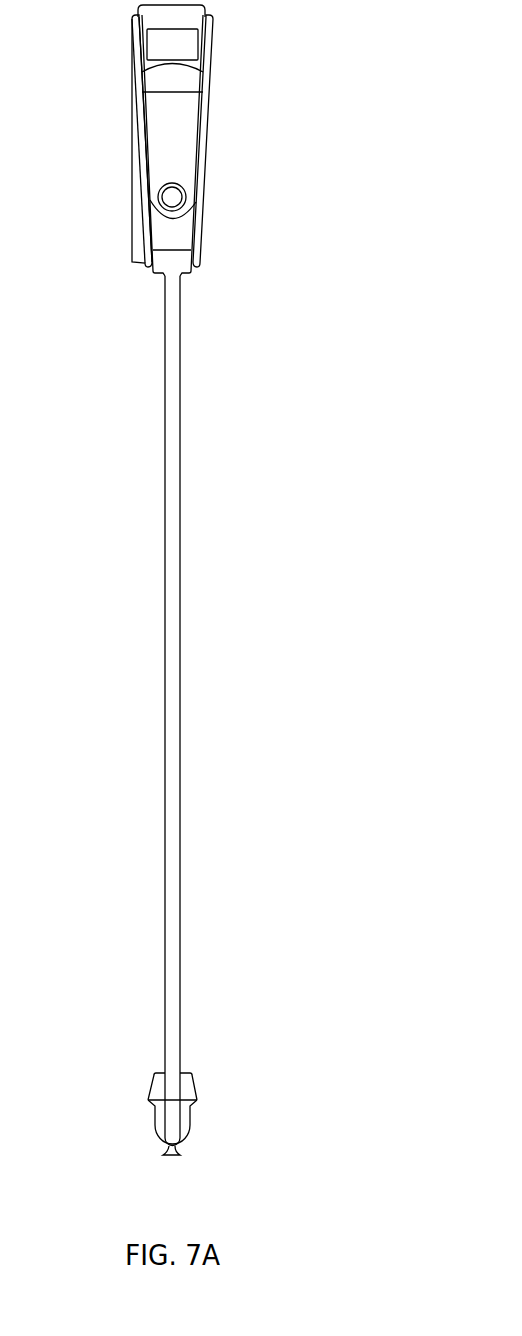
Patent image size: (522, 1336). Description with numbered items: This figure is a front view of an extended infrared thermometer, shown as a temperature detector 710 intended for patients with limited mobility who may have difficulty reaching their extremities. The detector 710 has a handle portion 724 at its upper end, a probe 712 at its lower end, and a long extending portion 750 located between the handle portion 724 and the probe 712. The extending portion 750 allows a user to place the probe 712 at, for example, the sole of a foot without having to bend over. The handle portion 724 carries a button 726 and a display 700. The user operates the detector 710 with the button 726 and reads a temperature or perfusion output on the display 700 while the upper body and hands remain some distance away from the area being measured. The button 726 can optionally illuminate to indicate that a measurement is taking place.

The display 700 is at (147, 44).
The temperature detector 710 is at (218, 580).
The handle portion 724 is at (136, 113).
The button 726 is at (187, 199).
The extending portion 750 is at (181, 673).
The probe 712 is at (194, 1083).